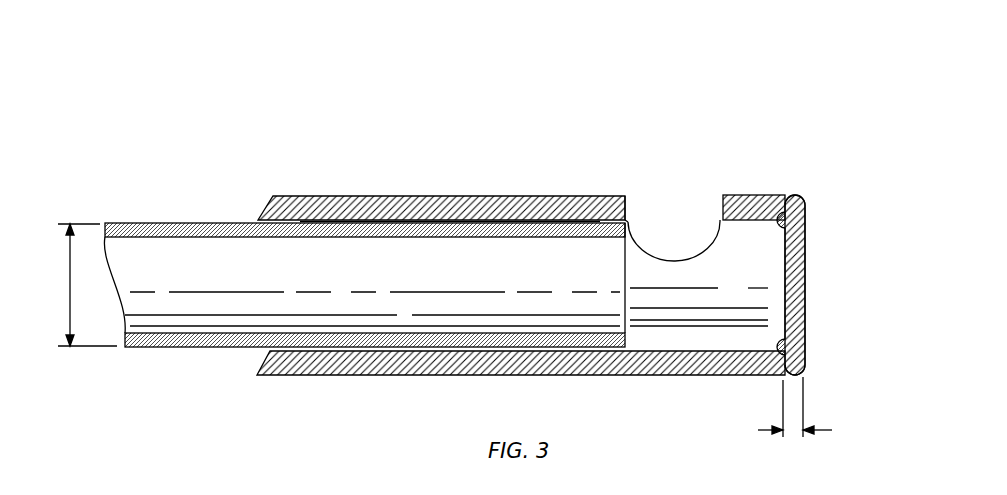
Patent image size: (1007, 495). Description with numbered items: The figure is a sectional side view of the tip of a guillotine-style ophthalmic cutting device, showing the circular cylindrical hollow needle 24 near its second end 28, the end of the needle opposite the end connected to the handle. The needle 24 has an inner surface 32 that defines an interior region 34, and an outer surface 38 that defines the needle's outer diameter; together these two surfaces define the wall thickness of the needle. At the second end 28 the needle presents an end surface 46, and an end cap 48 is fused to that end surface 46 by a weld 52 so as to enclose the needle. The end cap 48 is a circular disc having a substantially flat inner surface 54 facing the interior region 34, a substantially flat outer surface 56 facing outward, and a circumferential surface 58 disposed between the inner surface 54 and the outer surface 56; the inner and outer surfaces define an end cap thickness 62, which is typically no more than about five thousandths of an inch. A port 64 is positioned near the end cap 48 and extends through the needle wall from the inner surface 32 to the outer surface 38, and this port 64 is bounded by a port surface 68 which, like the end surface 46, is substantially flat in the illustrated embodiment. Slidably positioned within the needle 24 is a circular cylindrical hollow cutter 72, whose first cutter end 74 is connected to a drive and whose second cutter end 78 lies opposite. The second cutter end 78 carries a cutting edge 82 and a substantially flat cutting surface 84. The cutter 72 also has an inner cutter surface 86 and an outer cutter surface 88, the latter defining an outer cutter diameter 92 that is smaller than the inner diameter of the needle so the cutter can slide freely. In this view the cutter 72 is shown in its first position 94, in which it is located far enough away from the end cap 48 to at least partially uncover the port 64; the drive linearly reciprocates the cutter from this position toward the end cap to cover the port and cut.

The hollow needle 24 is at (333, 205).
The second end 28 is at (703, 420).
The inner surface 32 is at (383, 222).
The interior region 34 is at (690, 330).
The outer surface 38 is at (288, 375).
The end surface 46 is at (786, 213).
The end cap 48 is at (797, 275).
The weld 52 is at (796, 362).
The inner surface 54 is at (790, 309).
The outer surface 56 is at (806, 332).
The circumferential surface 58 is at (803, 205).
The end cap thickness 62 is at (812, 411).
The port 64 is at (677, 187).
The port surface 68 is at (627, 221).
The cutter 72 is at (188, 228).
The first cutter end 74 is at (53, 167).
The second cutter end 78 is at (547, 263).
The cutting edge 82 is at (628, 230).
The cutting surface 84 is at (628, 230).
The inner cutter surface 86 is at (183, 329).
The outer cutter surface 88 is at (208, 347).
The outer cutter diameter 92 is at (87, 285).
The first position 94 is at (493, 317).